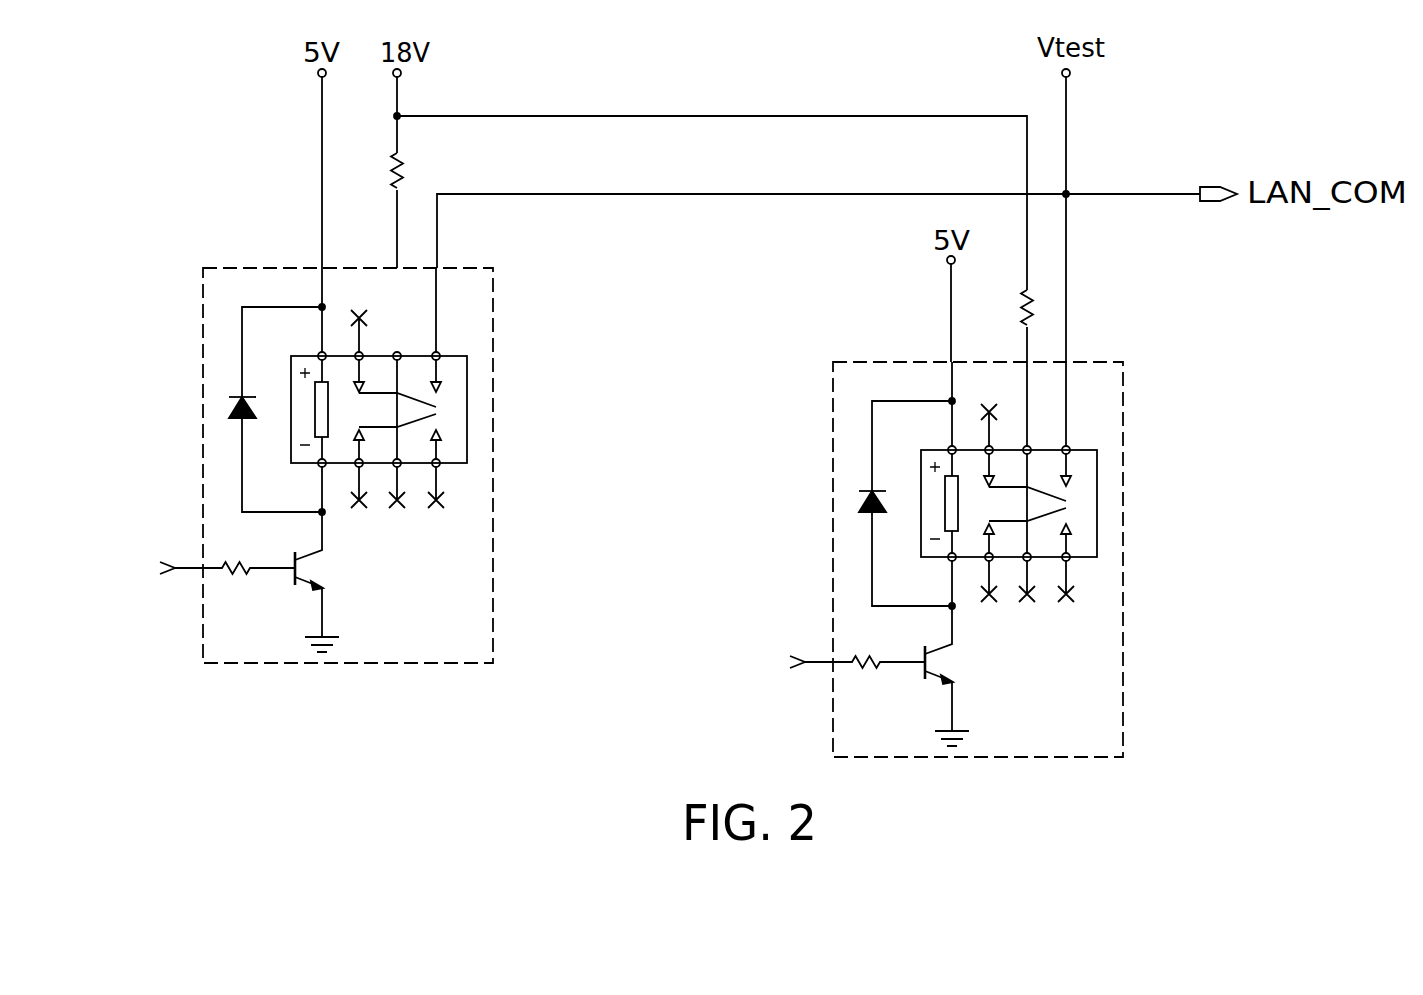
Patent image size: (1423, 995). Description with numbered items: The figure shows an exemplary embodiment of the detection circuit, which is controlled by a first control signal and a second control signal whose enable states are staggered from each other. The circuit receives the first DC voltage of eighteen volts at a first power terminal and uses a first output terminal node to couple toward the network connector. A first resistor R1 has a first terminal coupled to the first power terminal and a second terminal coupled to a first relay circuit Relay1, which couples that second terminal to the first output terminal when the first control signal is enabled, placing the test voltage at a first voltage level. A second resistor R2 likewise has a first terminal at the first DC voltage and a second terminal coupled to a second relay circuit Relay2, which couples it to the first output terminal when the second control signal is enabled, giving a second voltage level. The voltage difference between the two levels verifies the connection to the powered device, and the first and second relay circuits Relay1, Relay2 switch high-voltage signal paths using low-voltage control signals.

The first relay circuit Relay1 is at (227, 263).
The second relay circuit Relay2 is at (857, 357).
The first resistor R1 is at (390, 178).
The second resistor R2 is at (1018, 313).